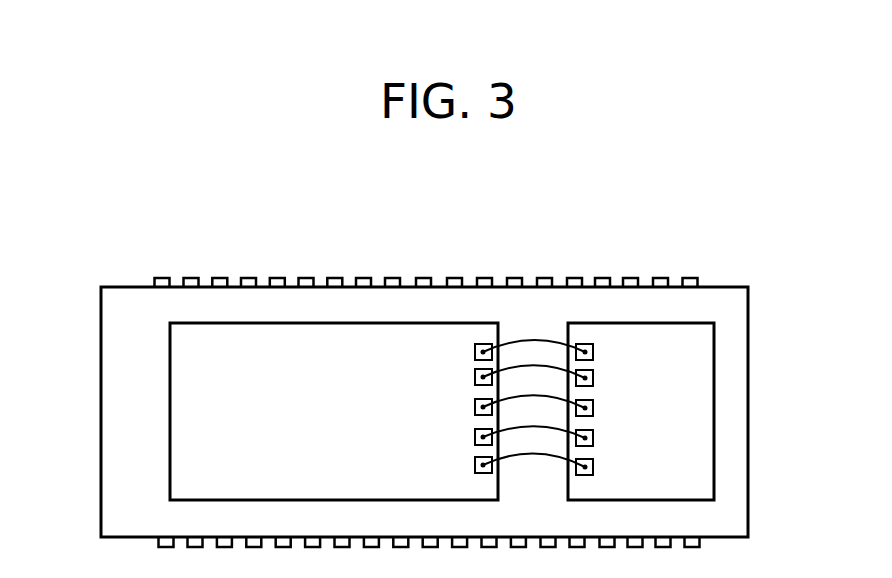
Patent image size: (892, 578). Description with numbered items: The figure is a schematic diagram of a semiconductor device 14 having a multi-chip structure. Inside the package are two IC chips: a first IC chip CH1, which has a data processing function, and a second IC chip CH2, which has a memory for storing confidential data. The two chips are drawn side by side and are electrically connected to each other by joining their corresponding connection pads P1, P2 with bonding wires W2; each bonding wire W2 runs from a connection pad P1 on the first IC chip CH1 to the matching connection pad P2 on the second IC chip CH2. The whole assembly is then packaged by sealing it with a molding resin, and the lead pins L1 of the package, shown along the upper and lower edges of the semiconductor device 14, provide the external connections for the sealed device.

The semiconductor device 14 is at (713, 286).
The lead pins L1 is at (165, 277).
The first IC chip CH1 is at (170, 393).
The second IC chip CH2 is at (715, 479).
The connection pads P1 is at (482, 342).
The connection pads P2 is at (592, 345).
The bonding wires W2 is at (537, 338).